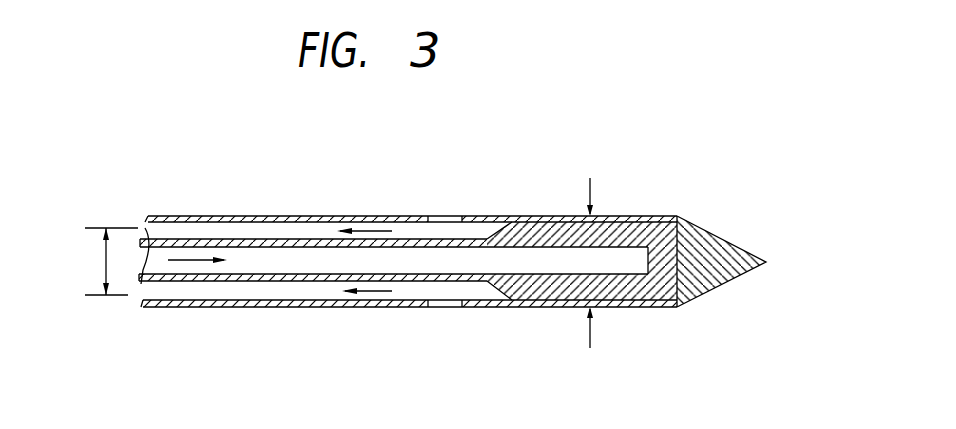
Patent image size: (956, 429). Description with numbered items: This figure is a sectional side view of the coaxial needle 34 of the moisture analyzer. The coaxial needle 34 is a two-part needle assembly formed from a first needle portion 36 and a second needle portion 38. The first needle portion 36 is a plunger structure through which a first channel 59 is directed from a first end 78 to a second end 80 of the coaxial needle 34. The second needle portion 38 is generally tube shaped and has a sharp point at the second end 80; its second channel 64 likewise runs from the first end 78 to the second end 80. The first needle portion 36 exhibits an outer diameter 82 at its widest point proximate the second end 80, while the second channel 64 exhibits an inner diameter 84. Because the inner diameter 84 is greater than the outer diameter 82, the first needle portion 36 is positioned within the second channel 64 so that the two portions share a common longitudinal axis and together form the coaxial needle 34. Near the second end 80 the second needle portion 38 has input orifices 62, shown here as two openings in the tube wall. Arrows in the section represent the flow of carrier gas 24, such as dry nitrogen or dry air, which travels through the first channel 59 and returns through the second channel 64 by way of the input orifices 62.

The carrier gas 24 is at (365, 230).
The coaxial needle 34 is at (84, 406).
The first needle portion 36 is at (527, 283).
The second needle portion 38 is at (268, 221).
The first channel 59 is at (262, 263).
The input orifice 62 is at (433, 216).
The second channel 64 is at (144, 228).
The first end 78 is at (175, 160).
The second end 80 is at (733, 195).
The outer diameter 82 is at (590, 187).
The inner diameter 84 is at (106, 266).